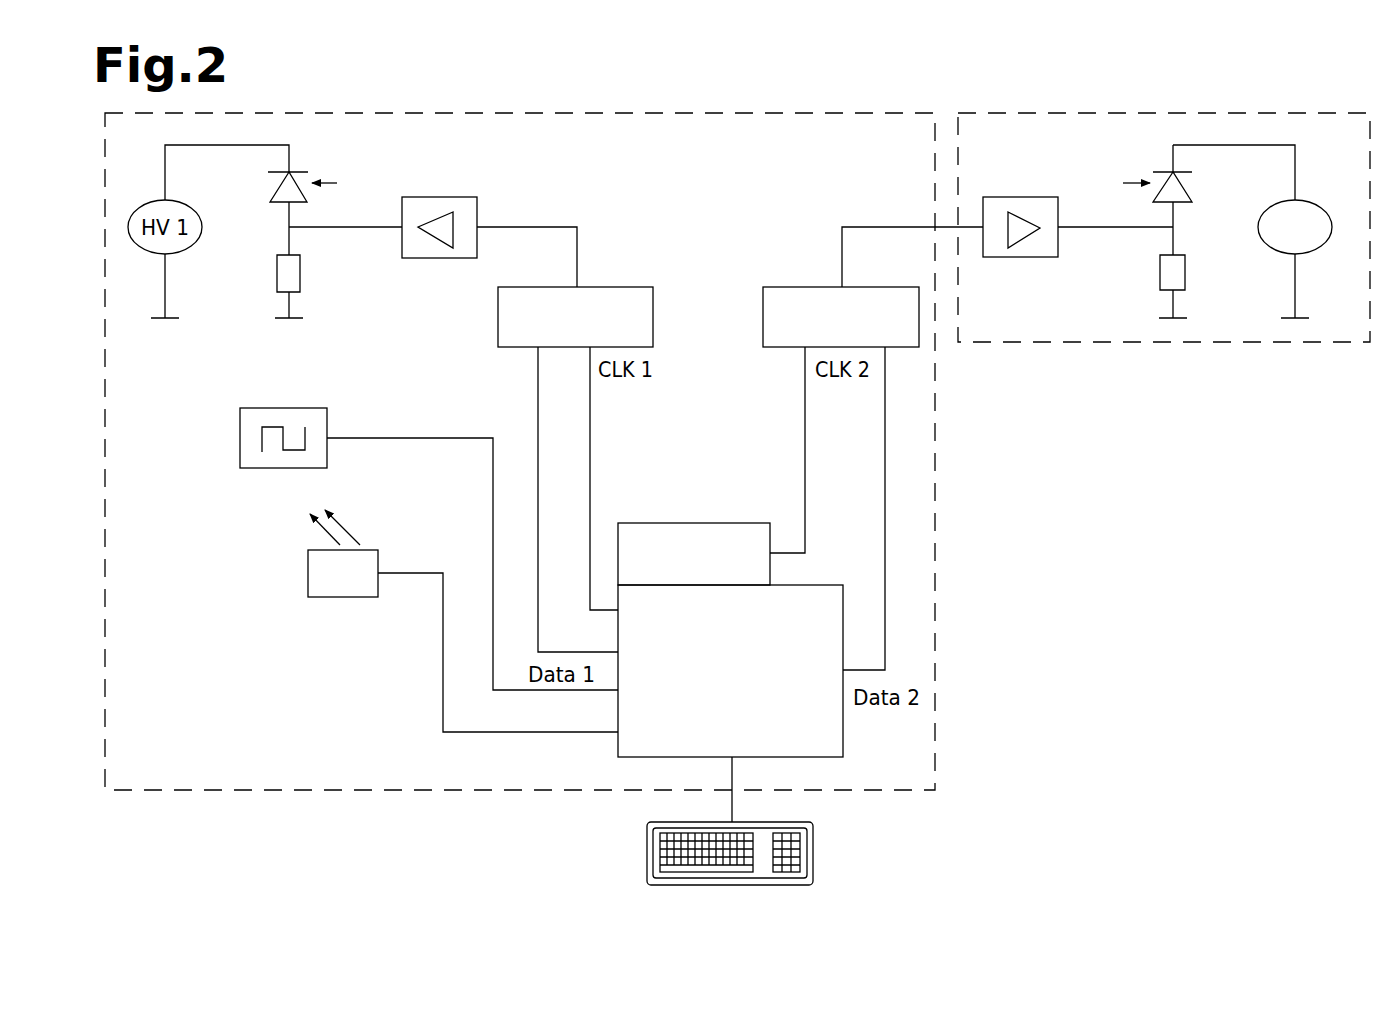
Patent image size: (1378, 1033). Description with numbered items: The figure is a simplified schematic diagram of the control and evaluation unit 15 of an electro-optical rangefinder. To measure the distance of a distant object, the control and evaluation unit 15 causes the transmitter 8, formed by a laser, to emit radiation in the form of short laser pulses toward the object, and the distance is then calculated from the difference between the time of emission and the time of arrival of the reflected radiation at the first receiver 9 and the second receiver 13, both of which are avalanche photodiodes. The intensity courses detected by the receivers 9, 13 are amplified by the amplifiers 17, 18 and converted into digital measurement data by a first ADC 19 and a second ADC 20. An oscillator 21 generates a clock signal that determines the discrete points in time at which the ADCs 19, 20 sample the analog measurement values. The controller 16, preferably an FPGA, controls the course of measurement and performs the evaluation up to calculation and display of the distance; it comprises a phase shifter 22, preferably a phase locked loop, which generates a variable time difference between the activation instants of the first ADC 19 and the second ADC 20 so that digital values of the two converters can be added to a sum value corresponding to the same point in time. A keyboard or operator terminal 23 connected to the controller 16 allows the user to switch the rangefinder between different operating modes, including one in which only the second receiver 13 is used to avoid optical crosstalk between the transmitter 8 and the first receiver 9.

The transmitter 8 is at (328, 617).
The first receiver 9 is at (318, 158).
The second receiver 13 is at (1160, 153).
The control and evaluation unit 15 is at (1164, 419).
The controller 16 is at (866, 736).
The first amplifier 17 is at (492, 207).
The second amplifier 18 is at (1053, 153).
The first ADC 19 is at (641, 268).
The second ADC 20 is at (799, 273).
The oscillator 21 is at (222, 432).
The phase shifter 22 is at (773, 505).
The keyboard 23 is at (618, 843).